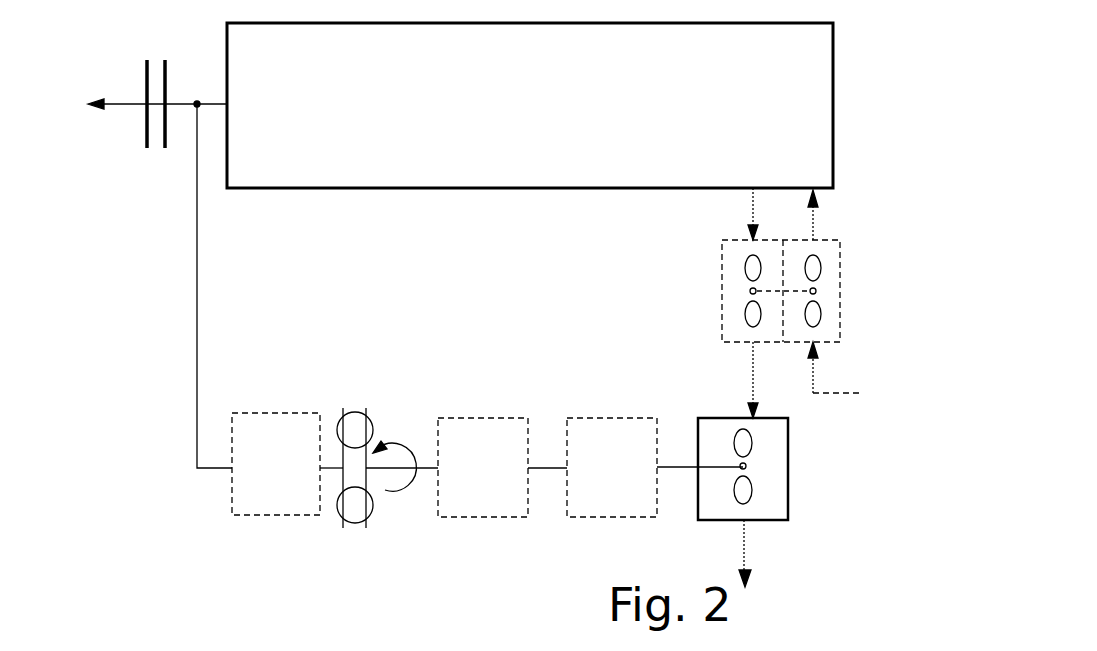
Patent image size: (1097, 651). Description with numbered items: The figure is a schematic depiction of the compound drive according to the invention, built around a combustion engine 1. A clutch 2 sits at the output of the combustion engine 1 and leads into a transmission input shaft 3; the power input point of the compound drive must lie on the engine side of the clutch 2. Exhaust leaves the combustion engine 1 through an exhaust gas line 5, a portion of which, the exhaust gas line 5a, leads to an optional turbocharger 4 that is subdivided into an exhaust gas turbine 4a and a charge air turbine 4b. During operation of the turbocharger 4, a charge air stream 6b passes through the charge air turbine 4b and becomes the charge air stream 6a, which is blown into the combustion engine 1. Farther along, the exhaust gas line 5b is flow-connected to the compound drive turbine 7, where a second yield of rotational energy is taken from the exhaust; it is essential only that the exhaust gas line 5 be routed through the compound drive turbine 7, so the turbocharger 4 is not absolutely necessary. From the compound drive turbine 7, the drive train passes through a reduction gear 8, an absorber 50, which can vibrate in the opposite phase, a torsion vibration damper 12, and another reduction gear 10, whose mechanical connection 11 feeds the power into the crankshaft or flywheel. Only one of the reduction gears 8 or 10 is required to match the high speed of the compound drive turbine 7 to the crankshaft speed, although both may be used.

The combustion engine 1 is at (529, 123).
The clutch 2 is at (155, 170).
The transmission input shaft 3 is at (122, 106).
The turbocharger 4 is at (700, 294).
The exhaust gas turbine 4a is at (737, 331).
The charge air turbine 4b is at (828, 319).
The exhaust gas line 5 is at (745, 212).
The exhaust gas line 5a is at (752, 198).
The exhaust gas line 5b is at (750, 373).
The charge air stream 6a is at (816, 233).
The charge air stream 6b is at (843, 393).
The compound drive turbine 7 is at (812, 498).
The reduction gear 8 is at (620, 479).
The reduction gear 10 is at (290, 479).
The mechanical connection 11 is at (200, 312).
The torsion vibration damper 12 is at (382, 538).
The absorber 50 is at (468, 442).